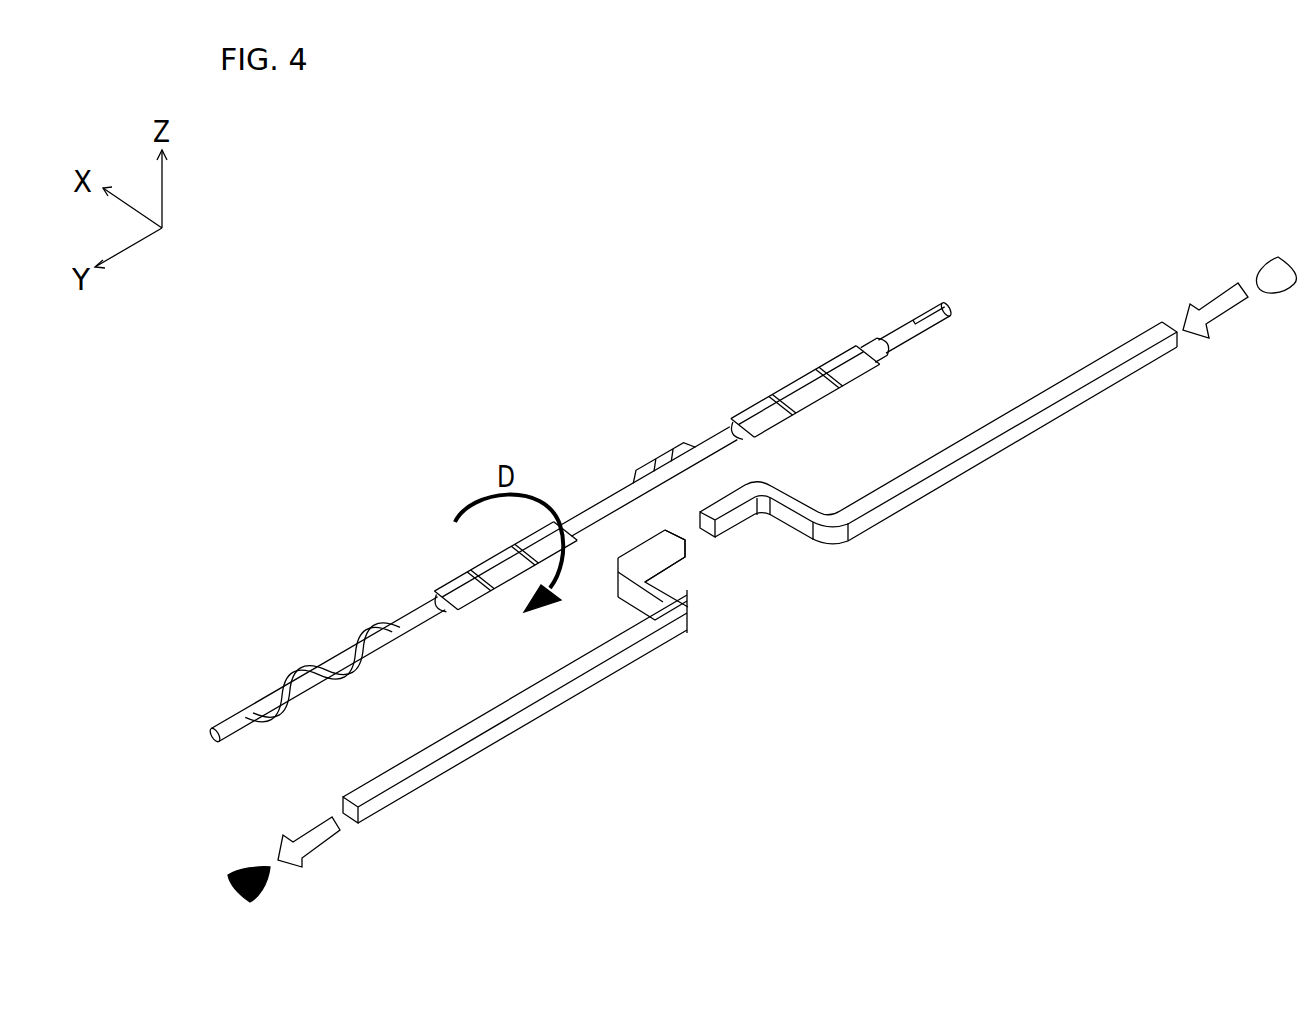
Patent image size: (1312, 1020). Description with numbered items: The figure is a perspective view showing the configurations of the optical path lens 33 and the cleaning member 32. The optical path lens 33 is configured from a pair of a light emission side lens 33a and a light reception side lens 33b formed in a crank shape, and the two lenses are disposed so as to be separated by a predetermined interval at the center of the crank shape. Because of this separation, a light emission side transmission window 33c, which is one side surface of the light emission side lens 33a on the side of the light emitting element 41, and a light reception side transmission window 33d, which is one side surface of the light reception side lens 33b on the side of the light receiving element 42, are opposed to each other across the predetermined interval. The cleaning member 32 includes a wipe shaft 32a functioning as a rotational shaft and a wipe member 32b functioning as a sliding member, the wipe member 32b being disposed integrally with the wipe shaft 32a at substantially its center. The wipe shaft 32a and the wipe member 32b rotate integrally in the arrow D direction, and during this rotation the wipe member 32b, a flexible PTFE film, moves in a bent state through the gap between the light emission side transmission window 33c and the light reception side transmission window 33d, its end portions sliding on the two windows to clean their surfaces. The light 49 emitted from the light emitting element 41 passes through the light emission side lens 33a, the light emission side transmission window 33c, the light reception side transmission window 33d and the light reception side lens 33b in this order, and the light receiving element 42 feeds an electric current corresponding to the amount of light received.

The cleaning member 32 is at (580, 510).
The wipe shaft 32a is at (725, 425).
The wipe member 32b is at (648, 463).
The optical path lens 33 is at (788, 572).
The light emission side lens 33a is at (966, 463).
The light reception side lens 33b is at (560, 676).
The light emission side transmission window 33c is at (712, 540).
The light reception side transmission window 33d is at (686, 545).
The light emitting element 41 is at (1277, 257).
The light receiving element 42 is at (235, 870).
The light 49 is at (1213, 303).